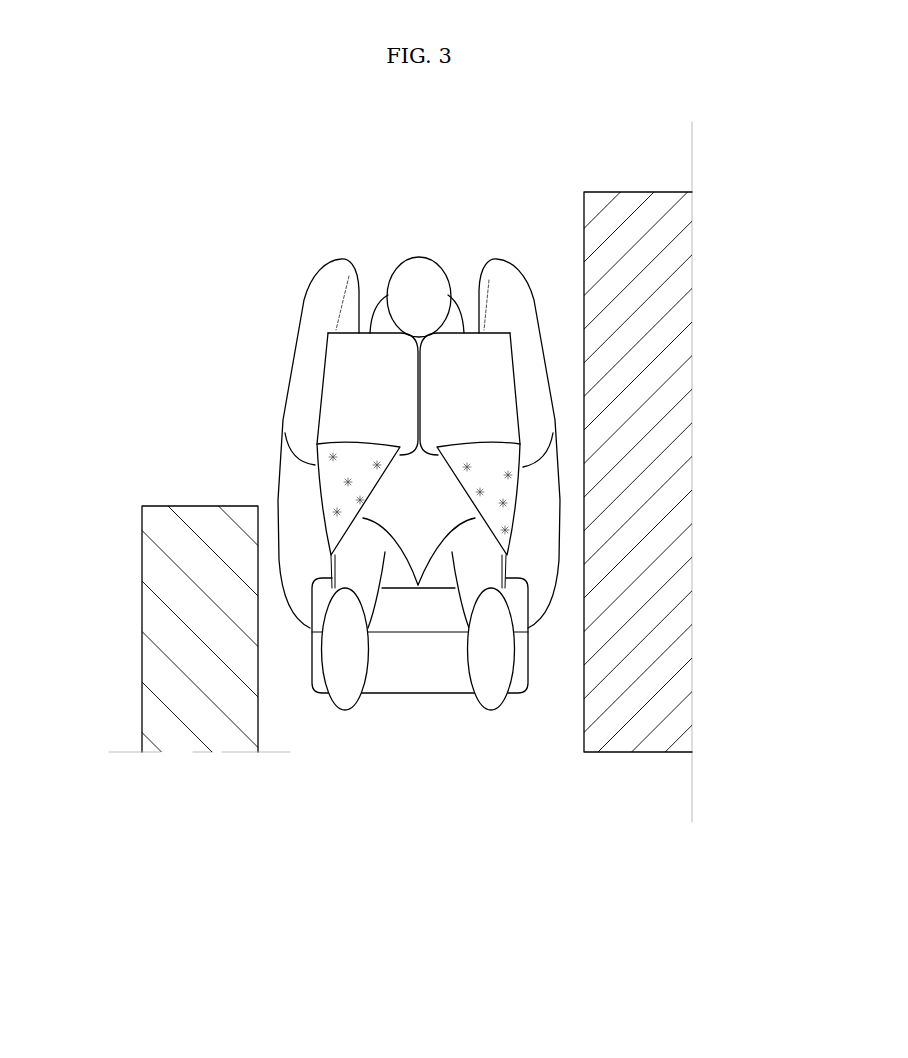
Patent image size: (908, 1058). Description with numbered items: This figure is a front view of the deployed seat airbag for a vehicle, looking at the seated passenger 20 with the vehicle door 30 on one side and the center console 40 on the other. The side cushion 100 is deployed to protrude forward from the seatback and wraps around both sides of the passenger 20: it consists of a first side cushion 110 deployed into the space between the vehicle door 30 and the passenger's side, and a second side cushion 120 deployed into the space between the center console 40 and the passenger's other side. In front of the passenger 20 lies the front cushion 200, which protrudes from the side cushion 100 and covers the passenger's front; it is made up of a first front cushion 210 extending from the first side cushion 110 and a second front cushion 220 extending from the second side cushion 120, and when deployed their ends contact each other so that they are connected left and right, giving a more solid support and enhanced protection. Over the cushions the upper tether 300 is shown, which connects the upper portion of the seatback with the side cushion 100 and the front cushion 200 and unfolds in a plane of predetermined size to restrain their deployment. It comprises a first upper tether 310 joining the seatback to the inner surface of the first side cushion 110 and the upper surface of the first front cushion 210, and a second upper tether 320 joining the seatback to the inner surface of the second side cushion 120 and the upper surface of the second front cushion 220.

The passenger 20 is at (418, 272).
The vehicle door 30 is at (675, 623).
The center console 40 is at (170, 614).
The side cushion 100 is at (390, 401).
The first side cushion 110 is at (495, 272).
The second side cushion 120 is at (317, 302).
The front cushion 200 is at (512, 394).
The first front cushion 210 is at (478, 387).
The second front cushion 220 is at (343, 395).
The upper tether 300 is at (507, 515).
The first upper tether 310 is at (504, 487).
The second upper tether 320 is at (333, 475).